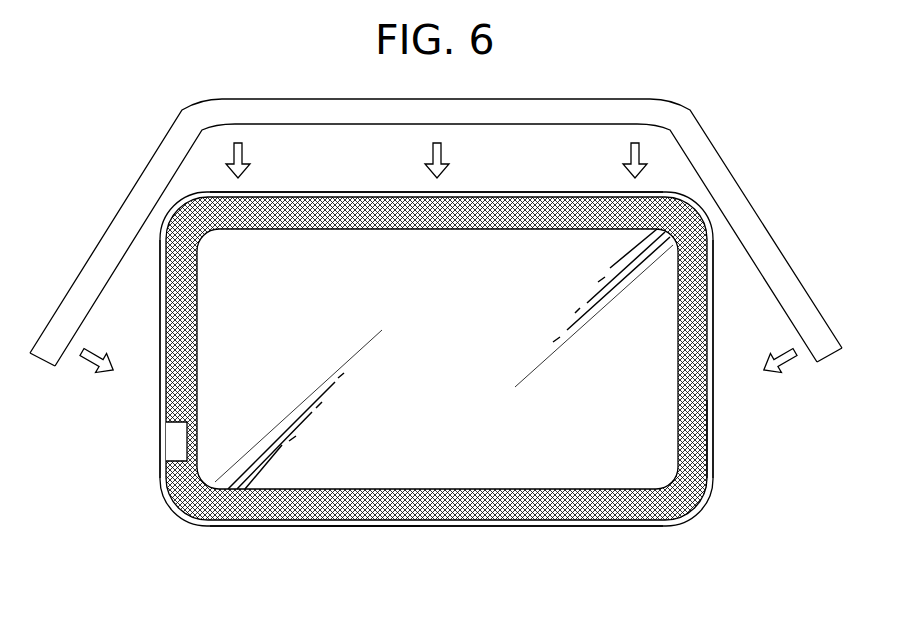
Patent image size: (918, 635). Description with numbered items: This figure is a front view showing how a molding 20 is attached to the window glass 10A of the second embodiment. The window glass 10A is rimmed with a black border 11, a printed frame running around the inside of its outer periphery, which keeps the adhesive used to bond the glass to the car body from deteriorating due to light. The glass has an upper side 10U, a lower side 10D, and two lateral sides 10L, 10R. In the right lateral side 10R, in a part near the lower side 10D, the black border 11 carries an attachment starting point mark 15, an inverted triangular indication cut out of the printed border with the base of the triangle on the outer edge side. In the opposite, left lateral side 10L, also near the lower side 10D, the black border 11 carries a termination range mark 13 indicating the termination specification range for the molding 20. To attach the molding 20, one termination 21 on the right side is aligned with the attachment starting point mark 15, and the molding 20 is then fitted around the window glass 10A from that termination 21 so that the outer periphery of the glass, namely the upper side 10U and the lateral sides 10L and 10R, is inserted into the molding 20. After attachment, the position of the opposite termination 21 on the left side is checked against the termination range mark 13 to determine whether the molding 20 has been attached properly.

The molding 20 is at (566, 85).
The termination 21 is at (830, 362).
The black border 11 is at (446, 510).
The termination range mark 13 is at (164, 447).
The attachment starting point mark 15 is at (718, 445).
The upper side 10U is at (372, 192).
The lower side 10D is at (538, 526).
The lateral side 10L is at (160, 365).
The lateral side 10R is at (713, 352).
The window glass 10A is at (361, 541).